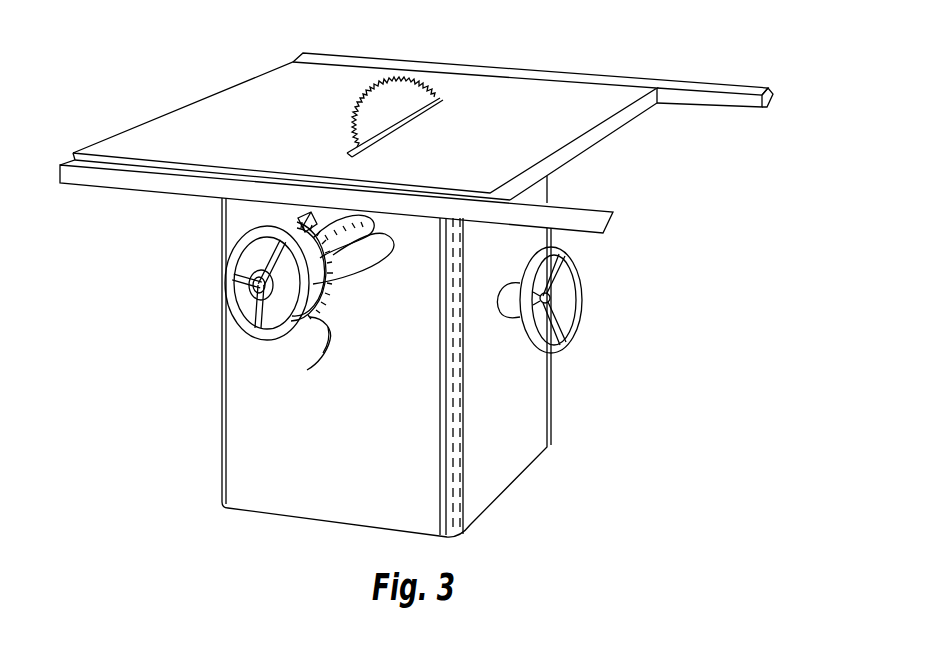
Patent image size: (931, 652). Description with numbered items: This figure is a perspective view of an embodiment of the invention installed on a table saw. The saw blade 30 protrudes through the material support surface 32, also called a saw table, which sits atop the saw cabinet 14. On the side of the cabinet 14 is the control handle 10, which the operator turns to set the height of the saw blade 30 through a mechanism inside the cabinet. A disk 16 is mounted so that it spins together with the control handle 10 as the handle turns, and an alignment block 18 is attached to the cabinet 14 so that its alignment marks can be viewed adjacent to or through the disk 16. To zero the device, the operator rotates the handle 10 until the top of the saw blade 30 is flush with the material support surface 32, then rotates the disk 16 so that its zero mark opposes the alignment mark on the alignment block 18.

The control handle 10 is at (227, 308).
The saw cabinet 14 is at (513, 397).
The disk 16 is at (323, 353).
The alignment block 18 is at (265, 216).
The saw blade 30 is at (400, 85).
The material support surface 32 is at (540, 100).